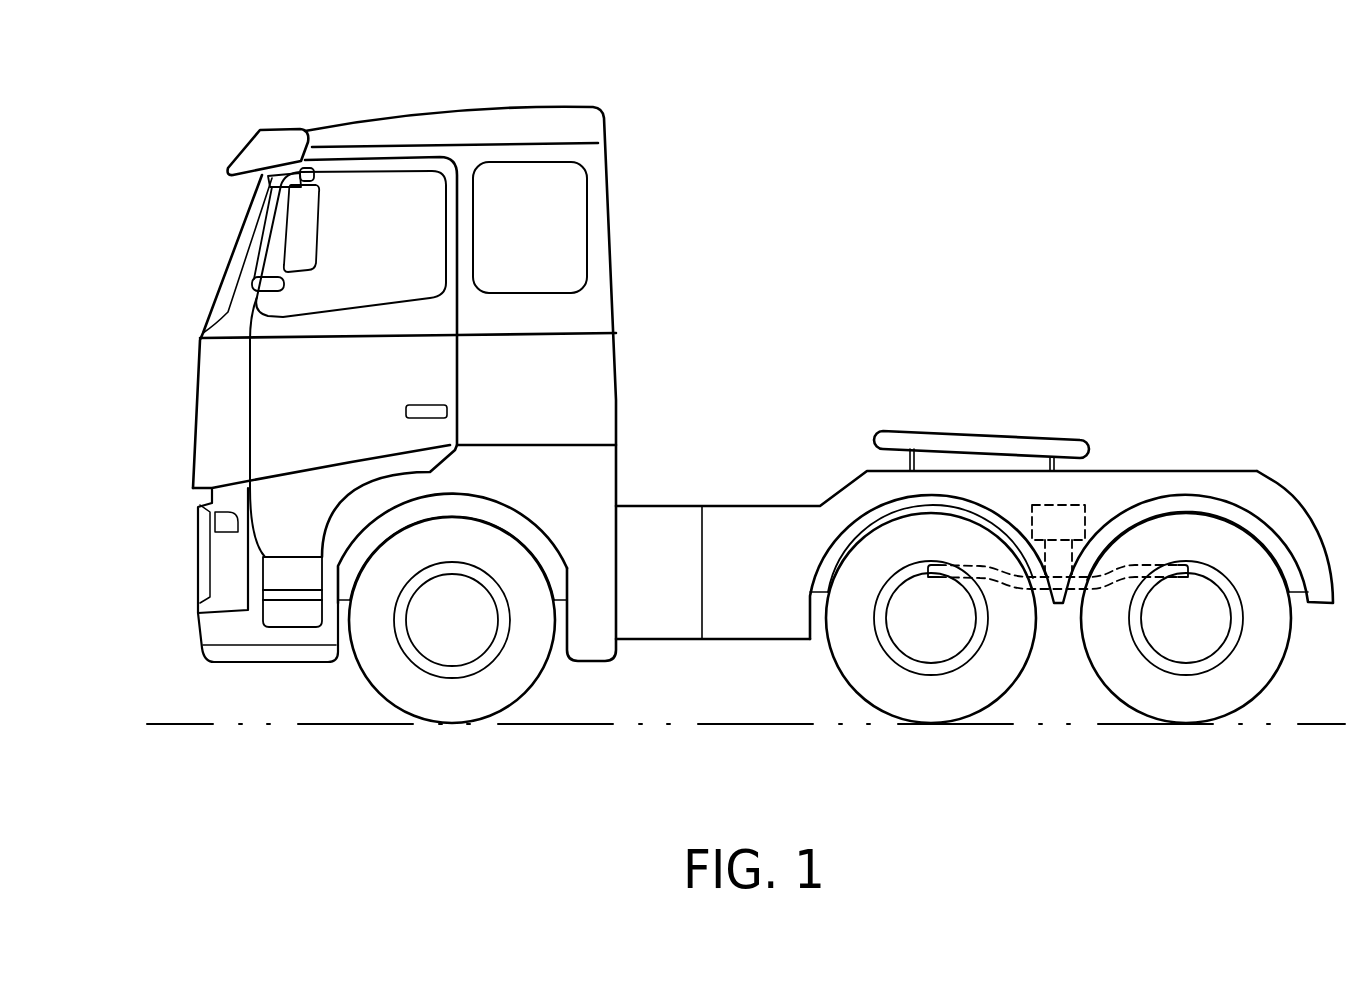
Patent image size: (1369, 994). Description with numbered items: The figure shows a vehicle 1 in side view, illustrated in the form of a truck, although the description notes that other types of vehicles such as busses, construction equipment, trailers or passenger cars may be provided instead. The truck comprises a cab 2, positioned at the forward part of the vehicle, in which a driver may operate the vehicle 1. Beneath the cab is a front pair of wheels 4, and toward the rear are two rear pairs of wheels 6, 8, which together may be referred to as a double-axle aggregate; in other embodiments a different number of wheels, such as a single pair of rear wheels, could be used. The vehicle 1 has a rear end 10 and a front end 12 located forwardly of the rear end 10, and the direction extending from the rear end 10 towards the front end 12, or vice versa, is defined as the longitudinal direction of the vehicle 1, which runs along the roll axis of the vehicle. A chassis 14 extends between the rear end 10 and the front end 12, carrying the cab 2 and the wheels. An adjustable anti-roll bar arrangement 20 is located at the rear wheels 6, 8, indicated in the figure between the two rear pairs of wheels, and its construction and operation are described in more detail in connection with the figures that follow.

The vehicle 1 is at (807, 190).
The cab 2 is at (407, 132).
The front pair of wheels 4 is at (457, 700).
The rear pair of wheels 6 is at (933, 700).
The rear pair of wheels 8 is at (1190, 698).
The rear end 10 is at (1280, 516).
The front end 12 is at (190, 412).
The chassis 14 is at (745, 506).
The adjustable anti-roll bar arrangement 20 is at (1057, 617).